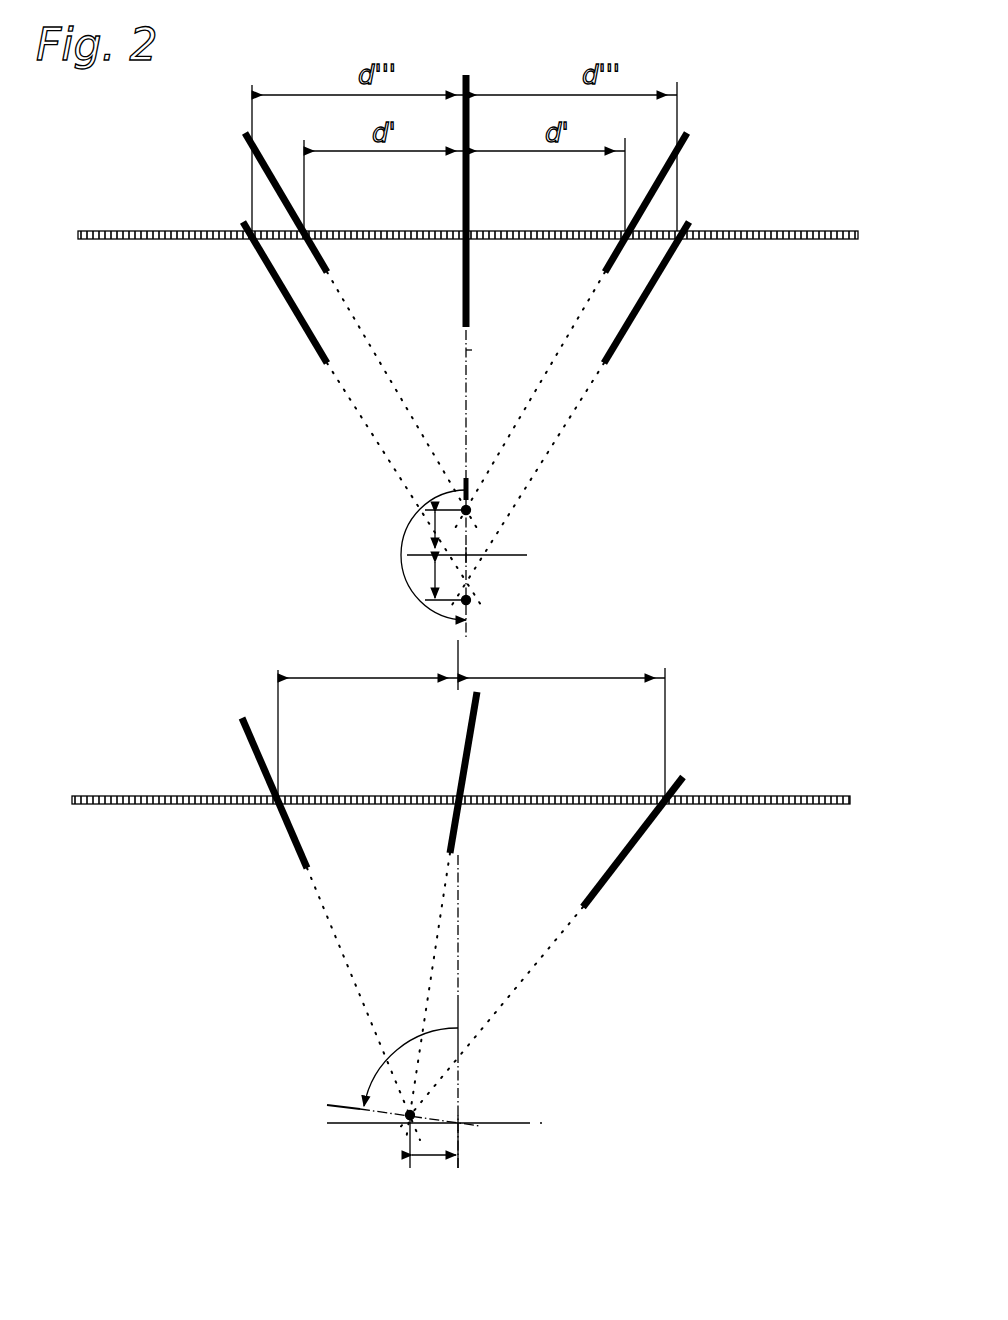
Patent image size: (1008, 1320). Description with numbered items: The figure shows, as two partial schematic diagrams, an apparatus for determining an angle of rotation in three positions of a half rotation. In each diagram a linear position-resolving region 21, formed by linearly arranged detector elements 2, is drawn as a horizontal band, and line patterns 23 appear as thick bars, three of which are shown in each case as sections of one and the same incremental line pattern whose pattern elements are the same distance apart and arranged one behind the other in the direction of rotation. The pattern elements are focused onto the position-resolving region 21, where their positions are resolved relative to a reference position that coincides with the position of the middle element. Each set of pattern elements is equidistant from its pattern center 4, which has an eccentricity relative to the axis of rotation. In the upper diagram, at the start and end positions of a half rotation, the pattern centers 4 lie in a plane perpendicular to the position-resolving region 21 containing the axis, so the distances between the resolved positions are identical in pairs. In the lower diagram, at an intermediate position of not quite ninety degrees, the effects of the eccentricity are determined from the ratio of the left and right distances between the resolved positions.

The detector elements 2 is at (847, 230).
The linear position-resolving region 21 is at (874, 235).
The line pattern 23 is at (336, 264).
The pattern center 4 is at (462, 509).